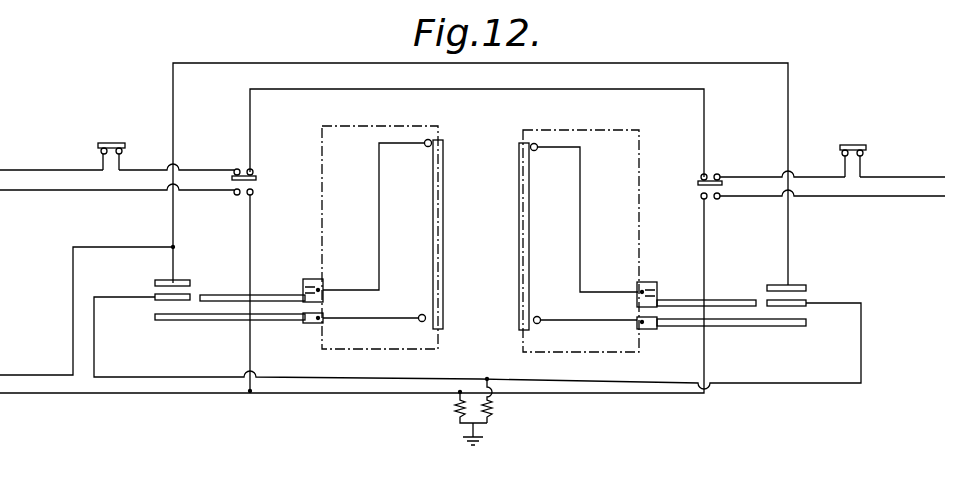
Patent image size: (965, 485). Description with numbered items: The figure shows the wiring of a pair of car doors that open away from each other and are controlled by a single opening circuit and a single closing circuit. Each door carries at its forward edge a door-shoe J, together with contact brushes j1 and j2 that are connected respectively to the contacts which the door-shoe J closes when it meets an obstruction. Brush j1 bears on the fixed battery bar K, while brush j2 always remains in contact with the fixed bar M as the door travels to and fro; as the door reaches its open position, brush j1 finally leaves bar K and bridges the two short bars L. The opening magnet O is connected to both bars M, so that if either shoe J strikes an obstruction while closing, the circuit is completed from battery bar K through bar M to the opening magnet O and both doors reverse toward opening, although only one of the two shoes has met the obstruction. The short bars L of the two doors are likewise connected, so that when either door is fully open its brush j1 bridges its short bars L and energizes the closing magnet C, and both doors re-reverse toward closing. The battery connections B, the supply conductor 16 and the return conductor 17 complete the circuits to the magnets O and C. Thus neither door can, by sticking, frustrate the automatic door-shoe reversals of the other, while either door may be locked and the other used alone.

The supply conductor 16 is at (173, 105).
The return conductor 17 is at (158, 377).
The battery terminals B+ B is at (472, 184).
The short bars L is at (470, 284).
The battery bar K is at (218, 295).
The bar M is at (220, 321).
The contact brush j1 is at (305, 279).
The contact brush j2 is at (652, 329).
The door-shoe J is at (443, 257).
The door-opening magnet O is at (457, 408).
The door-closing magnet C is at (500, 402).